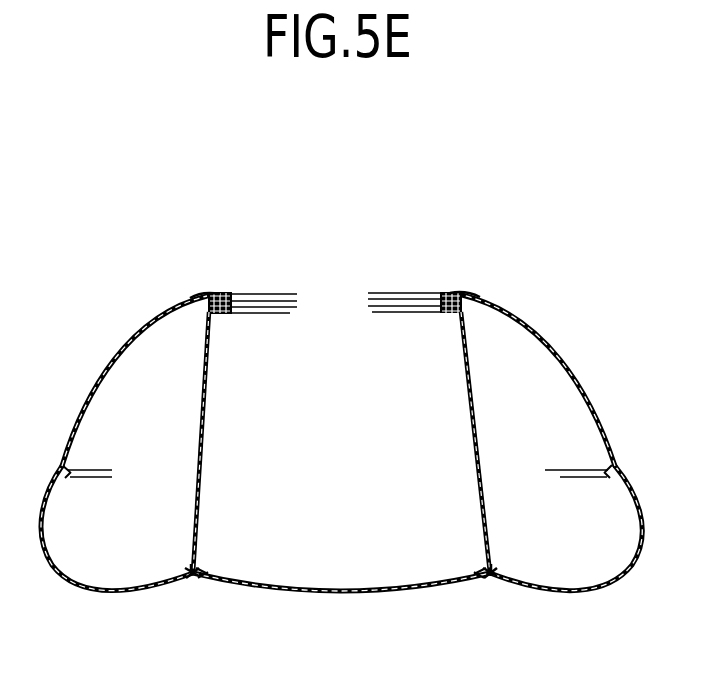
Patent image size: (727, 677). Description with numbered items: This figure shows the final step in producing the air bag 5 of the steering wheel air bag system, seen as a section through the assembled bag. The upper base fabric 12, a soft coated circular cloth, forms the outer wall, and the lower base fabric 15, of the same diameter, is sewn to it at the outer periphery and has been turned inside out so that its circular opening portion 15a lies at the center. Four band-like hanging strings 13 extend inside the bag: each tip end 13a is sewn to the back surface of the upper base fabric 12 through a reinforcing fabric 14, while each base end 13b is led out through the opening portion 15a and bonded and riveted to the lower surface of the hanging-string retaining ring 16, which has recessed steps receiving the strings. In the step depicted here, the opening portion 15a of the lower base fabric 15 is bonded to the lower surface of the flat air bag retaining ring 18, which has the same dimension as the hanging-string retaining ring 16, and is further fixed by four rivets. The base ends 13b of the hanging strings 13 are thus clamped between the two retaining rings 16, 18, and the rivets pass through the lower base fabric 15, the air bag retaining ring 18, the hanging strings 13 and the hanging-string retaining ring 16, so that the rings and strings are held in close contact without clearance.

The air bag 5 is at (214, 258).
The upper base fabric 12 is at (330, 593).
The hanging string 13 is at (201, 421).
The tip end of hanging string 13a is at (205, 572).
The base end of hanging string 13b is at (191, 297).
The reinforcing fabric 14 is at (200, 570).
The lower base fabric 15 is at (146, 330).
The opening portion 15a is at (247, 294).
The hanging-string retaining ring 16 is at (447, 311).
The air bag retaining ring 18 is at (444, 293).